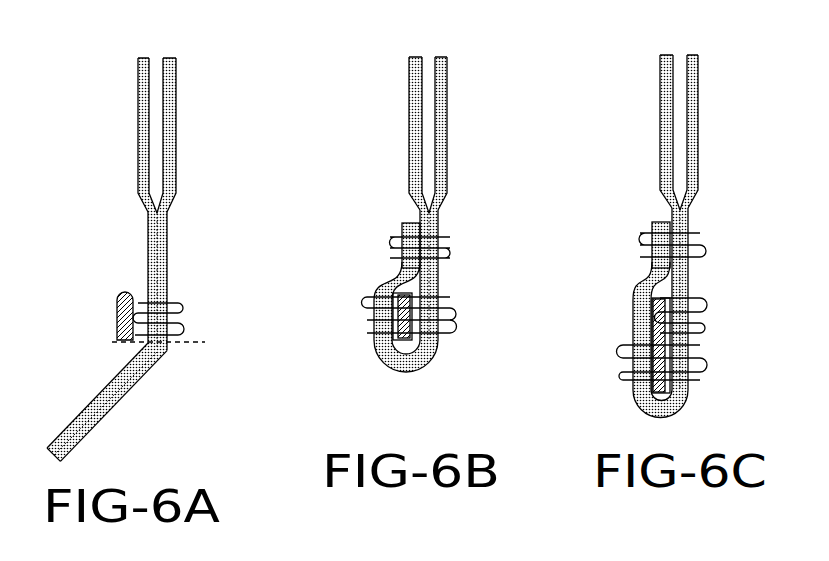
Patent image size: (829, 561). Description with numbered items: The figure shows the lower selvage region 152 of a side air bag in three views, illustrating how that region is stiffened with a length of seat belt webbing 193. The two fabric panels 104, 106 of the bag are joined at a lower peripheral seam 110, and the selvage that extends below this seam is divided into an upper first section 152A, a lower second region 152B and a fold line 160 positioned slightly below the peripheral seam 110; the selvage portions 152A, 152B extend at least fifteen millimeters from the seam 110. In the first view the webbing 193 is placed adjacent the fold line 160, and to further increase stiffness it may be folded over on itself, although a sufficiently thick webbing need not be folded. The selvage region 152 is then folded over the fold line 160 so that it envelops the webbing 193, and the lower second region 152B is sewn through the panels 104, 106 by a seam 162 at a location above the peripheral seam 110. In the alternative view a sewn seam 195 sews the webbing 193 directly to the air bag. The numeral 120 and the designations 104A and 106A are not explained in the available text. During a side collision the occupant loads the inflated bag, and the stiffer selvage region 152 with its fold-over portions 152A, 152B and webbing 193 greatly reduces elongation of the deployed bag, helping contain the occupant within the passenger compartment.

In FIG. 6A, the panel 104 is at (133, 118).
In FIG. 6B, the panel 104 is at (405, 143).
In FIG. 6C, the panel 104 is at (655, 143).
In FIG. 6A, the panel 106 is at (182, 118).
In FIG. 6B, the panel 106 is at (452, 143).
In FIG. 6C, the panel 106 is at (702, 143).
In FIG. 6A, the flow direction through tubes 120 is at (157, 142).
In FIG. 6B, the flow direction through tubes 120 is at (428, 82).
In FIG. 6C, the flow direction through tubes 120 is at (679, 82).
In FIG. 6A, the lower selvage region 152 is at (146, 266).
In FIG. 6B, the lower selvage region 152 is at (376, 268).
In FIG. 6C, the lower selvage region 152 is at (636, 270).
In FIG. 6A, the upper first section 152A is at (178, 336).
In FIG. 6A, the lower second region 152B is at (125, 395).
In FIG. 6A, the fold line 160 is at (205, 345).
In FIG. 6A, the peripheral seam 110 is at (178, 303).
In FIG. 6B, the peripheral seam 110 is at (444, 337).
In FIG. 6C, the peripheral seam 110 is at (700, 300).
In FIG. 6A, the seat belt webbing 193 is at (115, 298).
In FIG. 6B, the seat belt webbing 193 is at (395, 336).
In FIG. 6C, the seat belt webbing 193 is at (654, 310).
In FIG. 6B, the seam 162 is at (398, 238).
In FIG. 6C, the seam 162 is at (648, 235).
In FIG. 6B, the sewn seam 195 is at (450, 298).
In FIG. 6C, the sewn seam 195 is at (700, 364).
In FIG. 6A, the angled portion of first tube 104A is at (92, 403).
In FIG. 6A, the angled portion of second tube 106A is at (78, 438).